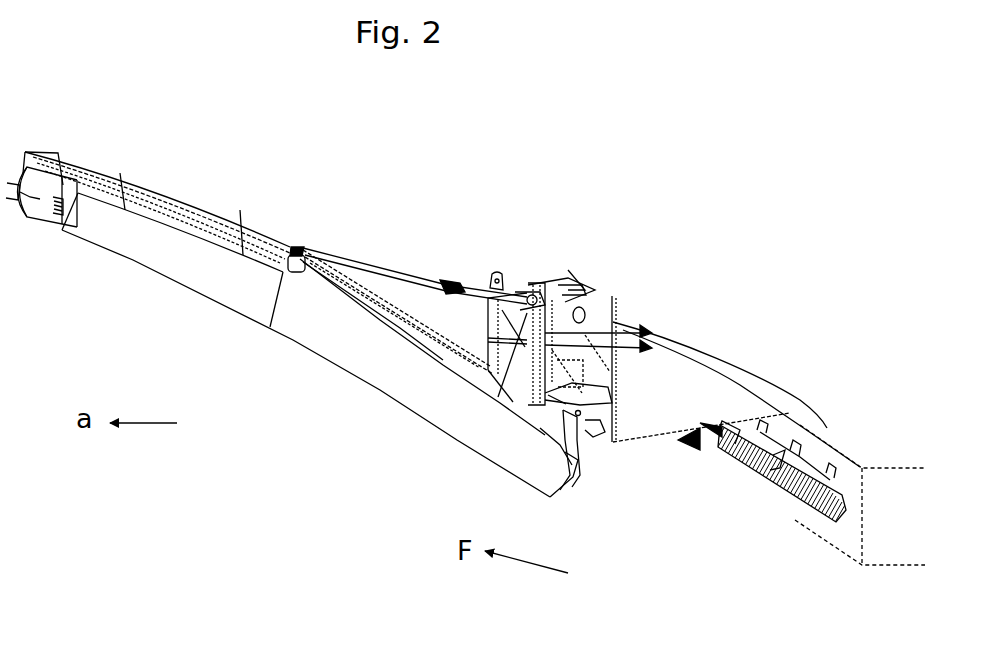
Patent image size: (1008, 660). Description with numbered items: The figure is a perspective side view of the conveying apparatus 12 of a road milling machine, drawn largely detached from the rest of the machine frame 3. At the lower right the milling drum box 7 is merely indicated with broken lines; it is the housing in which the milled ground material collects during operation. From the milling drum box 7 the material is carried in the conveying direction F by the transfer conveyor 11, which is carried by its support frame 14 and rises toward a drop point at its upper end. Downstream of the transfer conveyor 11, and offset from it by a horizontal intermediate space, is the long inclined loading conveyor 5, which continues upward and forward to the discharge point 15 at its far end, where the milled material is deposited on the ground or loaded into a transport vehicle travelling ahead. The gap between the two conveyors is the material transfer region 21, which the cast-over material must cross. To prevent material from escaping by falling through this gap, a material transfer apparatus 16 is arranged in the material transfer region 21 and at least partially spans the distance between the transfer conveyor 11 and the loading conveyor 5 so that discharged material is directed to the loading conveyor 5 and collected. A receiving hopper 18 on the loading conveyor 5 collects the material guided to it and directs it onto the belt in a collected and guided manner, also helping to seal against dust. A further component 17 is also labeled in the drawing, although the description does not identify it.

The machine frame 3 is at (686, 377).
The loading conveyor 5 is at (143, 227).
The milling drum box 7 is at (812, 492).
The transfer conveyor 11 is at (780, 470).
The conveying apparatus 12 is at (654, 247).
The support frame 14 is at (720, 440).
The discharge point 15 is at (33, 150).
The material transfer apparatus 16 is at (578, 370).
The pivot joint 17 is at (538, 285).
The receiving hopper 18 is at (570, 417).
The material transfer region 21 is at (597, 432).